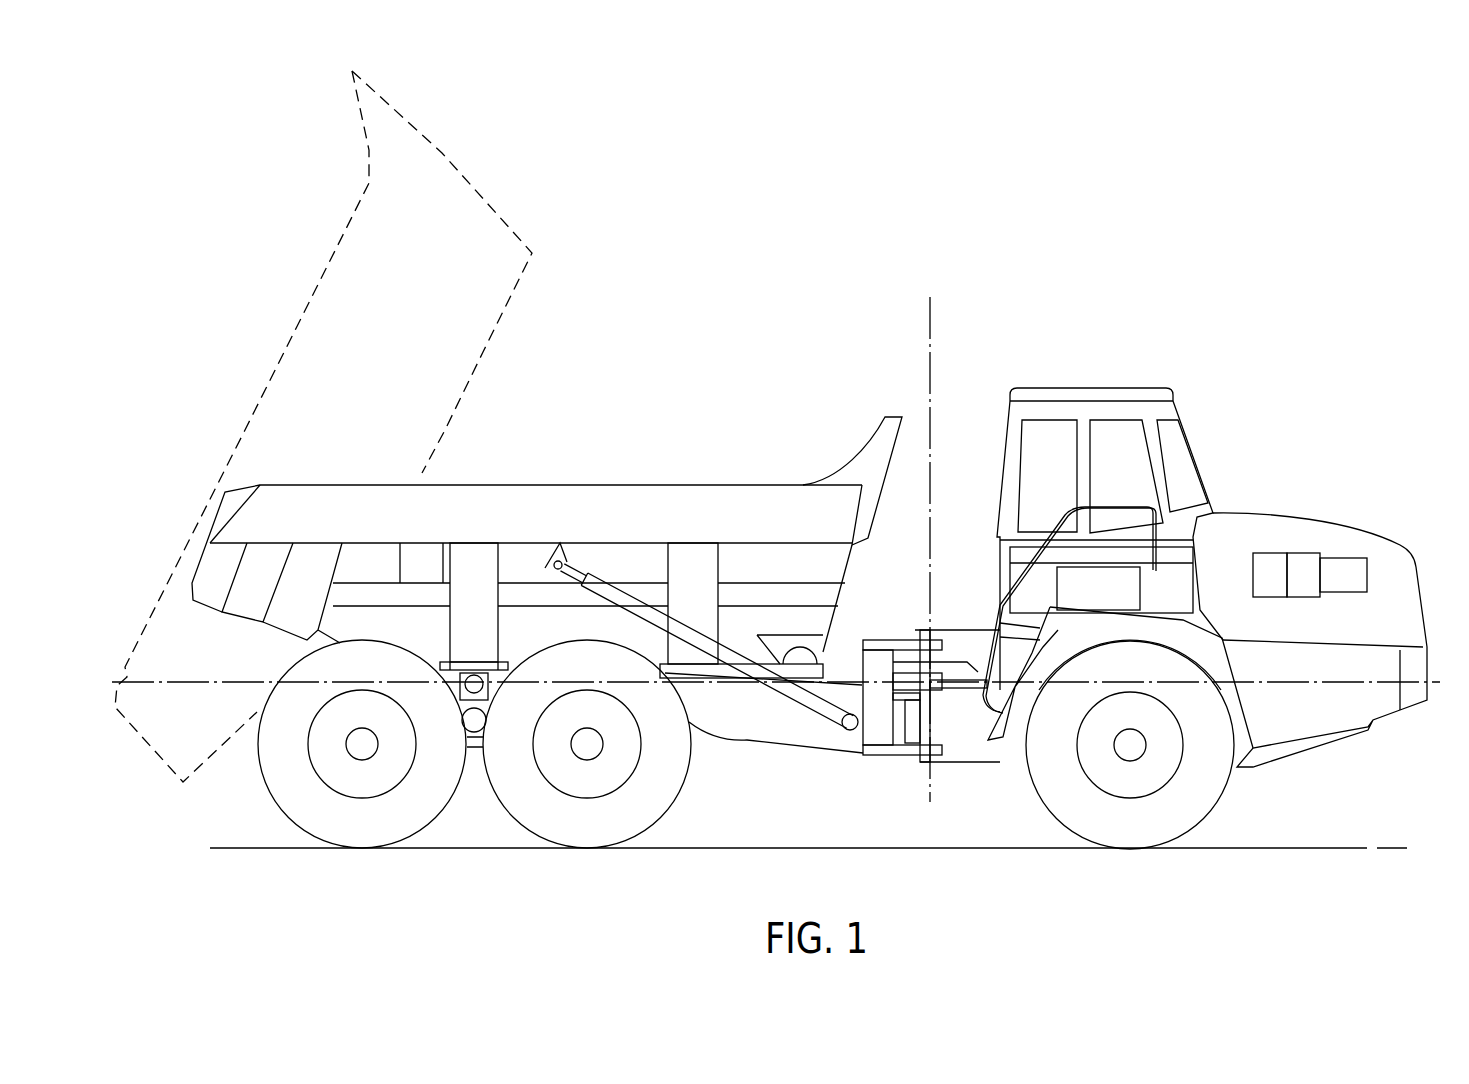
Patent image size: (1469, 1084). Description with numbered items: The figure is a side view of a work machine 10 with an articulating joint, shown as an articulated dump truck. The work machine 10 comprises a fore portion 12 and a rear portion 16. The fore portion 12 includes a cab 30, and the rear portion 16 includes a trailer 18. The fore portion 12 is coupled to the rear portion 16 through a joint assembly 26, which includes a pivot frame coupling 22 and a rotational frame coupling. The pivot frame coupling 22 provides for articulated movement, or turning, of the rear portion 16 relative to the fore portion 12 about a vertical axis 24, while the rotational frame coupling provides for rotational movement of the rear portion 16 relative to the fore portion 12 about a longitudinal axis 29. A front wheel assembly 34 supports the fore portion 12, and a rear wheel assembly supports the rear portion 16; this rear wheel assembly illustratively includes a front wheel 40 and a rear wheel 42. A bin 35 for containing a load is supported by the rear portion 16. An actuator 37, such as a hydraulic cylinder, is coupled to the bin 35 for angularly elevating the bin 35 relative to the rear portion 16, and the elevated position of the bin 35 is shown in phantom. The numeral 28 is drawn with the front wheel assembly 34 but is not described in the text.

The work machine 10 is at (1188, 105).
The fore portion 12 is at (1258, 303).
The rear portion 16 is at (660, 228).
The trailer 18 is at (720, 700).
The pivot frame coupling 22 is at (1130, 745).
The vertical axis 24 is at (930, 320).
The joint assembly 26 is at (905, 763).
The ground engaging element 28 is at (1130, 745).
The longitudinal axis 29 is at (1445, 685).
The cab 30 is at (1118, 395).
The front wheel assembly 34 is at (1130, 817).
The bin 35 is at (483, 352).
The actuator 37 is at (640, 583).
The front wheel 40 is at (595, 820).
The rear wheel assembly 42 is at (373, 820).